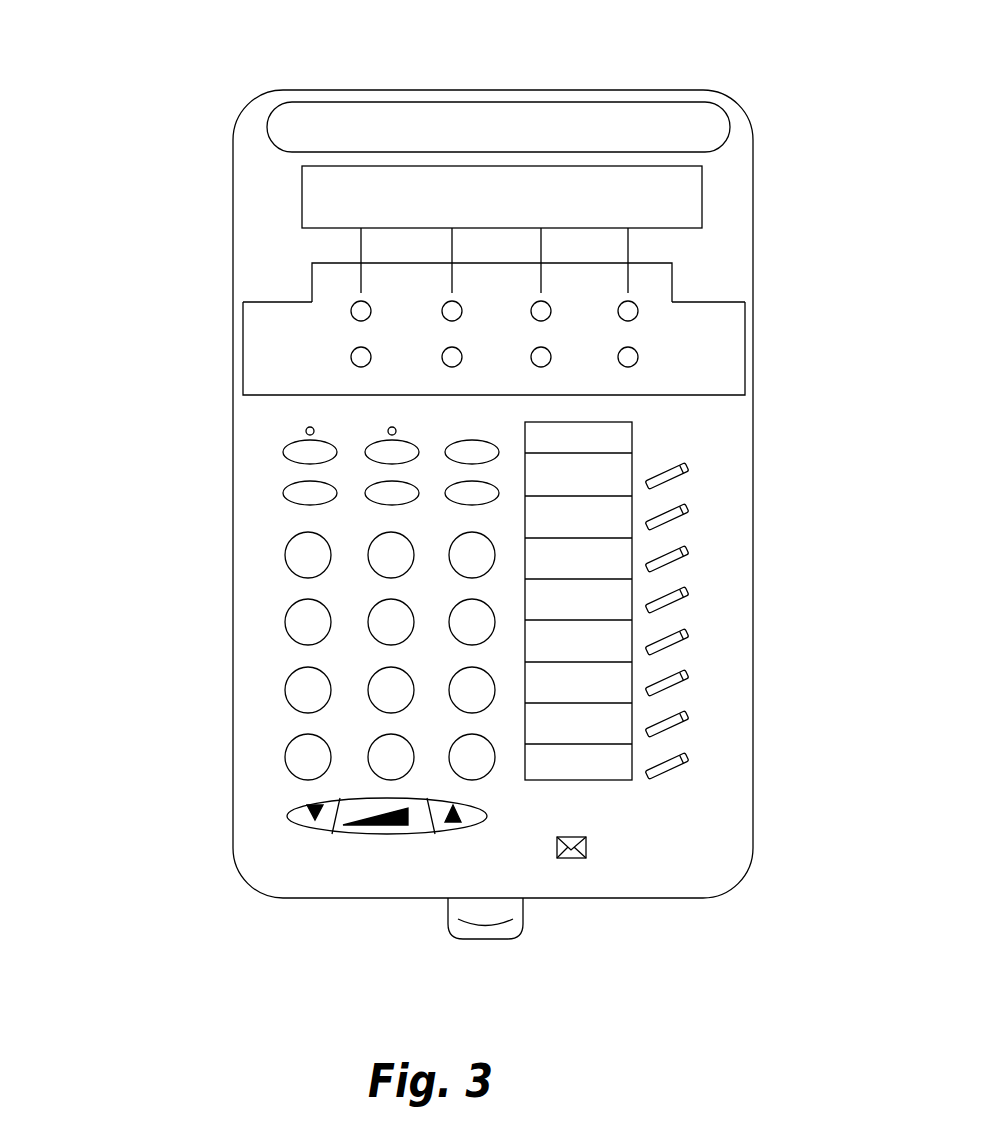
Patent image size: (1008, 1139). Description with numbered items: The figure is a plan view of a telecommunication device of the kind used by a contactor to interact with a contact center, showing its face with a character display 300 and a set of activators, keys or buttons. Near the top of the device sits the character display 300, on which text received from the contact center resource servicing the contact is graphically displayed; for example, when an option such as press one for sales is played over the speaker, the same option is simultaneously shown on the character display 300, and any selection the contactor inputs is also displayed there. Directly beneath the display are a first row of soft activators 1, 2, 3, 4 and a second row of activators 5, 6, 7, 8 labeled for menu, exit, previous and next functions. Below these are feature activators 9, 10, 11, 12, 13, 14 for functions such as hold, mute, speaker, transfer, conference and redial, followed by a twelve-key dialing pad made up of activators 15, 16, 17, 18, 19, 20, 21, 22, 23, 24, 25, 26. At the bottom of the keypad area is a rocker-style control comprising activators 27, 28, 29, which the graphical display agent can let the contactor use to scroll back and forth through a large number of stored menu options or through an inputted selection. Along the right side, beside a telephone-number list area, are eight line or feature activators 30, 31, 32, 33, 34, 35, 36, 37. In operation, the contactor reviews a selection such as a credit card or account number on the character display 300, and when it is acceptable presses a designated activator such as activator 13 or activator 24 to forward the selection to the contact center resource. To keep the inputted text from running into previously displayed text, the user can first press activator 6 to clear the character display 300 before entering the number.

The character display 300 is at (703, 173).
The activator 1 is at (352, 303).
The activator 2 is at (457, 302).
The activator 3 is at (550, 302).
The activator 4 is at (637, 303).
The activator 5 is at (351, 355).
The activator 6 is at (463, 355).
The activator 7 is at (551, 355).
The activator 8 is at (638, 355).
The activator 9 is at (460, 441).
The activator 10 is at (375, 441).
The activator 11 is at (283, 452).
The activator 12 is at (365, 490).
The activator 13 is at (448, 490).
The activator 14 is at (283, 495).
The activator 15 is at (370, 545).
The activator 16 is at (450, 545).
The activator 17 is at (285, 557).
The activator 18 is at (370, 612).
The activator 19 is at (450, 612).
The activator 20 is at (285, 624).
The activator 21 is at (370, 680).
The activator 22 is at (450, 680).
The activator 23 is at (285, 692).
The activator 24 is at (370, 748).
The activator 25 is at (450, 747).
The activator 26 is at (286, 770).
The activator 27 is at (310, 828).
The activator 28 is at (365, 836).
The activator 29 is at (452, 823).
The activator 30 is at (687, 467).
The activator 31 is at (687, 508).
The activator 32 is at (687, 550).
The activator 33 is at (687, 591).
The activator 34 is at (687, 633).
The activator 35 is at (687, 674).
The activator 36 is at (687, 715).
The activator 37 is at (687, 757).